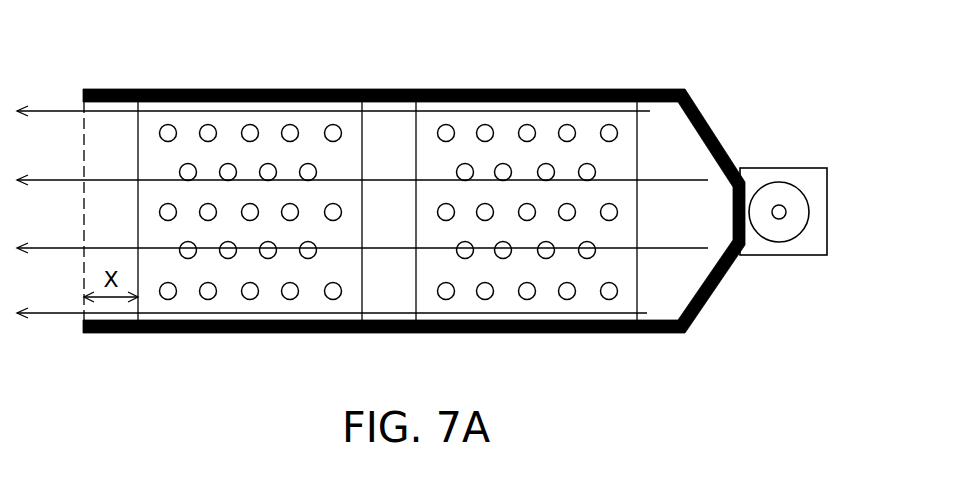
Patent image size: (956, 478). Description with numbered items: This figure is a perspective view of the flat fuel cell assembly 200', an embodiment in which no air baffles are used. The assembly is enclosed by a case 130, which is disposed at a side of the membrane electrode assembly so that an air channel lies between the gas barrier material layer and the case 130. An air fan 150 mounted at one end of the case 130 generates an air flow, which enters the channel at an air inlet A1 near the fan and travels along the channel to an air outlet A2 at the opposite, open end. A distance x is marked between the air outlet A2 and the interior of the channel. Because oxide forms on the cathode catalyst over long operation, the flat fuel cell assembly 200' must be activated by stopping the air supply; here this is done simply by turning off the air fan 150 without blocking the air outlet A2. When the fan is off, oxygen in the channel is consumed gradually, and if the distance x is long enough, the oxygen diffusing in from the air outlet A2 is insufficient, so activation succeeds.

The case 130 is at (615, 89).
The air fan 150 is at (775, 255).
The flat fuel cell assembly 200' is at (790, 389).
The air inlet A1 is at (714, 218).
The air outlet A2 is at (72, 146).